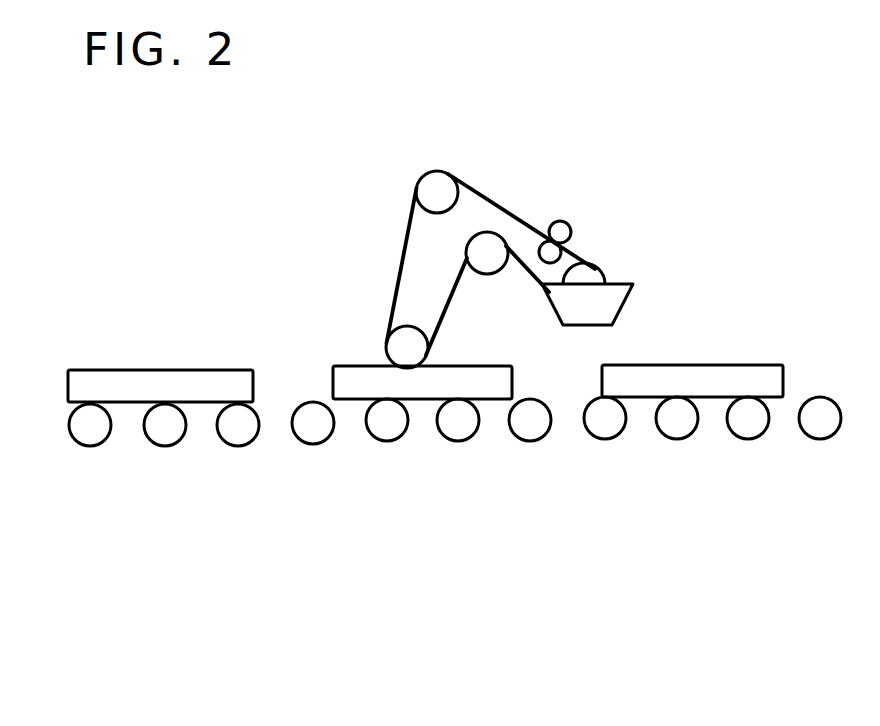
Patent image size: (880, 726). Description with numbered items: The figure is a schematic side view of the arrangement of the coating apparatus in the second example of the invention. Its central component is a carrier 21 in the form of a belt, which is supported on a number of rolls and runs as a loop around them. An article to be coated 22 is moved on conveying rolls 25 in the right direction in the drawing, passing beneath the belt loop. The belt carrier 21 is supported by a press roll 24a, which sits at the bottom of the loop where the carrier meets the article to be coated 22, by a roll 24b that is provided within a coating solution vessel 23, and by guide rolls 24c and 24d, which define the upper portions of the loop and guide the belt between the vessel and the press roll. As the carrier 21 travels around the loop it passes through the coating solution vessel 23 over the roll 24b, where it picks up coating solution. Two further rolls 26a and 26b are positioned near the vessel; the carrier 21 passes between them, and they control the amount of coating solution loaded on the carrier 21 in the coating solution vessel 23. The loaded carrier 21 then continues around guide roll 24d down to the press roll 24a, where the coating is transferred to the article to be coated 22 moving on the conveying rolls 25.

The carrier 21 is at (399, 257).
The article to be coated 22 is at (168, 370).
The coating solution vessel 23 is at (622, 295).
The press roll 24a is at (398, 347).
The roll 24b is at (587, 272).
The guide roll 24c is at (432, 190).
The guide roll 24d is at (487, 245).
The conveying rolls 25 is at (305, 445).
The roll 26a is at (560, 232).
The roll 26b is at (547, 252).